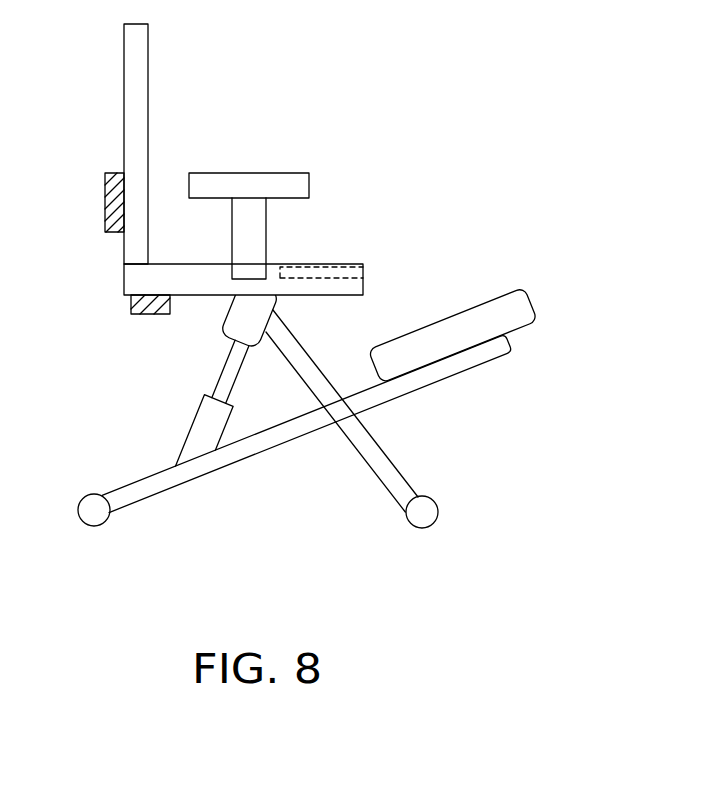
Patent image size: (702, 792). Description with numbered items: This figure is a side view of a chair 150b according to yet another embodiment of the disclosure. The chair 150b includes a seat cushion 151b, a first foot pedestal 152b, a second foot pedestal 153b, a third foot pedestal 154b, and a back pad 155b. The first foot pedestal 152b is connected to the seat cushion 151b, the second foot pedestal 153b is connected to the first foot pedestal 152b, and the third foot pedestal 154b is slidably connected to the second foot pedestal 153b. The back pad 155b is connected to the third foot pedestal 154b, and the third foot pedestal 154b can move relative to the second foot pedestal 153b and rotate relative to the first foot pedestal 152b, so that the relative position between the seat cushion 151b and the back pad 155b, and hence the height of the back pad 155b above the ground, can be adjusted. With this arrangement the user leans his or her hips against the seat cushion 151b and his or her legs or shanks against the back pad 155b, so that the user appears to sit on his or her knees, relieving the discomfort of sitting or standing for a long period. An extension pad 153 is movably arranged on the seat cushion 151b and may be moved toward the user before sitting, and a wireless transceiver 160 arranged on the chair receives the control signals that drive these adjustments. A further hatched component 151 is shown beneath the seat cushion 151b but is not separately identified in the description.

The chair 150b is at (309, 294).
The mounting block 151 is at (127, 303).
The seat cushion 151b is at (130, 283).
The first foot pedestal 152b is at (227, 372).
The extension pad 153 is at (337, 272).
The second foot pedestal 153b is at (398, 480).
The third foot pedestal 154b is at (272, 442).
The back pad 155b is at (468, 318).
The wireless transceiver 160 is at (112, 200).